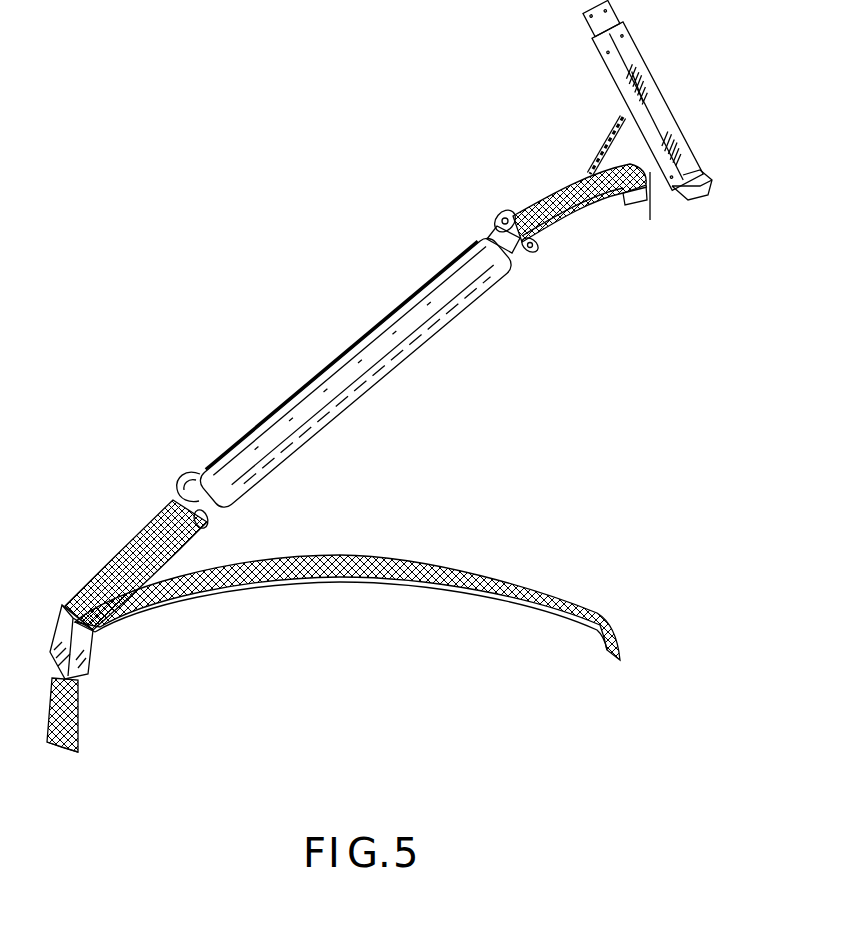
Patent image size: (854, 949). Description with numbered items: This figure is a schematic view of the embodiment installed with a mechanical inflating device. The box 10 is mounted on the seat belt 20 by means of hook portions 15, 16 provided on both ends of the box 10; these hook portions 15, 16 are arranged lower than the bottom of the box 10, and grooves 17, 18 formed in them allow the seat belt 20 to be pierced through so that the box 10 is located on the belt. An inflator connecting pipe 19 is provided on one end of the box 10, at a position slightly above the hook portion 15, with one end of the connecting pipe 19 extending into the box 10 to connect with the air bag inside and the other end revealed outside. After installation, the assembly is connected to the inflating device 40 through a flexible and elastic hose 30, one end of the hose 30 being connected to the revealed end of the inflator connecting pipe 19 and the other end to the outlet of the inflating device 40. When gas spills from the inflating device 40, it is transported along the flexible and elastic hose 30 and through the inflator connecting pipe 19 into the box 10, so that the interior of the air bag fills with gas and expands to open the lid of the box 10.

The box 10 is at (383, 373).
The hook portion 15 is at (496, 213).
The hook portion 16 is at (188, 486).
The groove 17 is at (493, 233).
The groove 18 is at (210, 512).
The inflator connecting pipe 19 is at (523, 252).
The seat belt 20 is at (592, 207).
The flexible and elastic hose 30 is at (602, 157).
The inflating device 40 is at (667, 118).